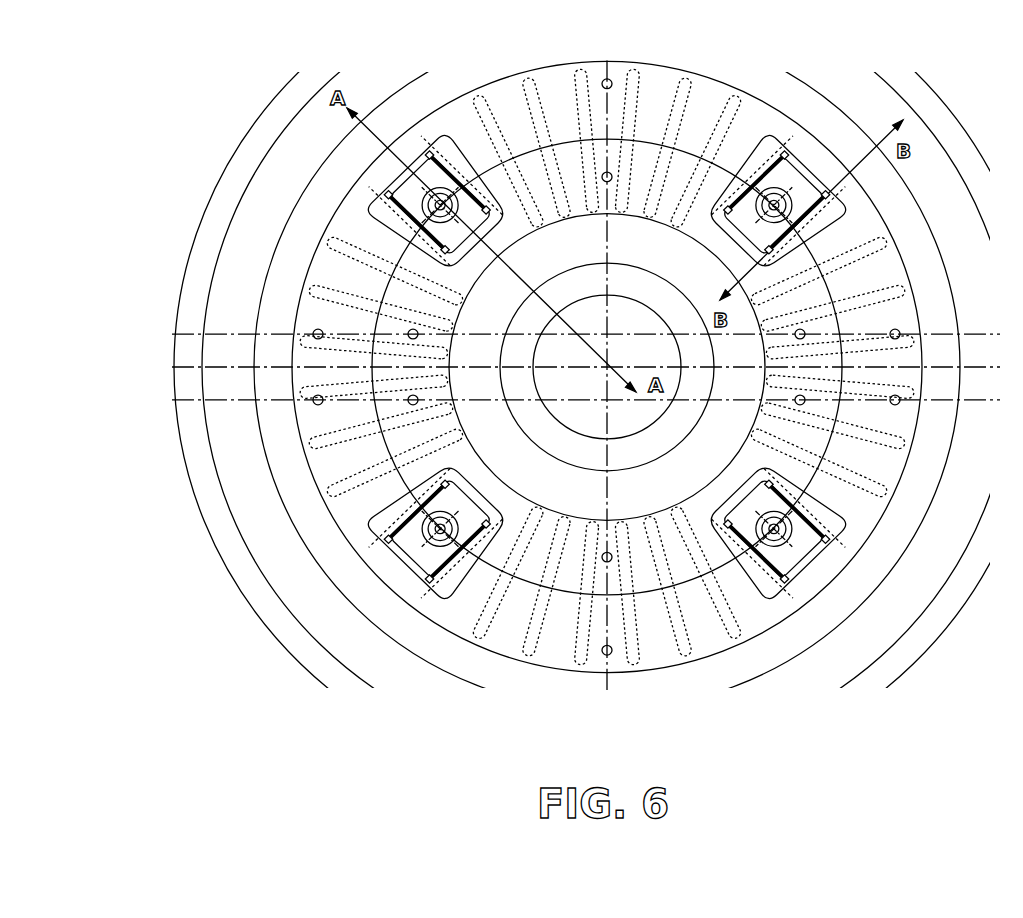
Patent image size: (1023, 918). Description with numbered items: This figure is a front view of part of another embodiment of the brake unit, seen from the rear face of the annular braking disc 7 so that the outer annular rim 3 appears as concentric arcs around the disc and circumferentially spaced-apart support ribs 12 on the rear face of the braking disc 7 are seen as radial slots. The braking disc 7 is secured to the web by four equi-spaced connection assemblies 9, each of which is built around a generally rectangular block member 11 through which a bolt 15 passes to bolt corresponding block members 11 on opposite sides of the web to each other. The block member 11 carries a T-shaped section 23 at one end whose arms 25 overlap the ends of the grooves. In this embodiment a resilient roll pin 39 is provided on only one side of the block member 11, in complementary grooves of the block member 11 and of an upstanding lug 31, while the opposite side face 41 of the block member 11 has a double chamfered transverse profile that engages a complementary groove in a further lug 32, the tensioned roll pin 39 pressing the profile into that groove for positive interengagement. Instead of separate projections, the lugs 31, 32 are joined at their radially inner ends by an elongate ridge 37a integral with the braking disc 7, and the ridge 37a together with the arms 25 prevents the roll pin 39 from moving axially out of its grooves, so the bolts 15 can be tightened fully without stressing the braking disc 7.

The outer annular rim 3 is at (213, 514).
The braking disc 7 is at (333, 272).
The connection assembly 9 is at (578, 358).
The block member 11 is at (463, 525).
The support rib 12 is at (335, 300).
The bolt 15 is at (737, 257).
The T-shaped section 23 is at (415, 548).
The arms 25 is at (380, 548).
The lug 31 is at (380, 523).
The further lug 32 is at (448, 590).
The elongate ridge 37a is at (477, 490).
The roll pin 39 is at (446, 480).
The side face 41 is at (756, 180).